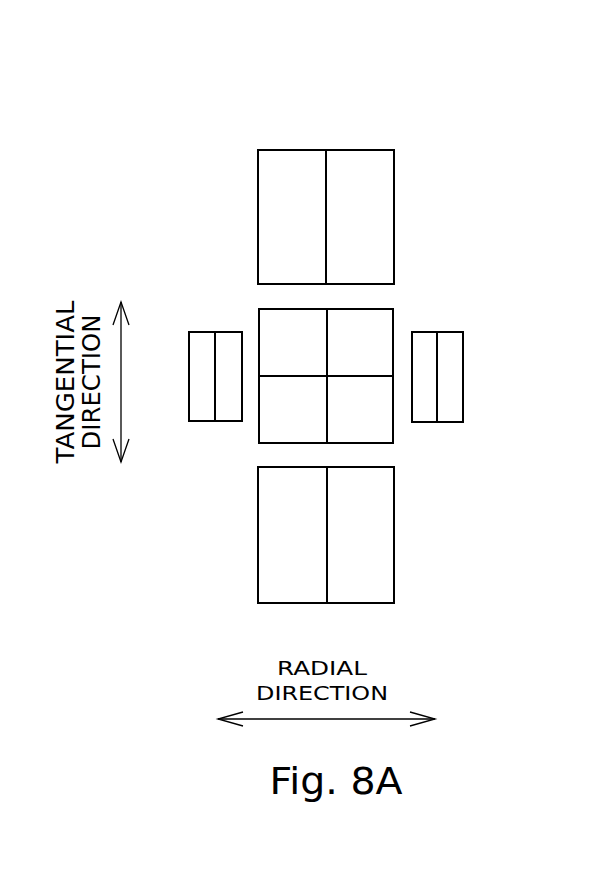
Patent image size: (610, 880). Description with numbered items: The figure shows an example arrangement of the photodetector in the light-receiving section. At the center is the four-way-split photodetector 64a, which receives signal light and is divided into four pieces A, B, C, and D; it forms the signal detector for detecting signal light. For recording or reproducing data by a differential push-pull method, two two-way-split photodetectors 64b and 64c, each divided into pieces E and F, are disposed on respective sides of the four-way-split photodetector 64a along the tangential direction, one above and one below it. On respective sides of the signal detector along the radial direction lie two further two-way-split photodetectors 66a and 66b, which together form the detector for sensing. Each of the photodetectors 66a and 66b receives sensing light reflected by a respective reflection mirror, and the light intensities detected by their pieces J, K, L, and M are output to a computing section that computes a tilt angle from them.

The four-way-split photodetector 64a is at (394, 428).
The two-way-split photodetector 64b is at (337, 150).
The two-way-split photodetector 64c is at (394, 555).
The two-way-split photodetector 66a is at (223, 332).
The two-way-split photodetector 66b is at (445, 332).